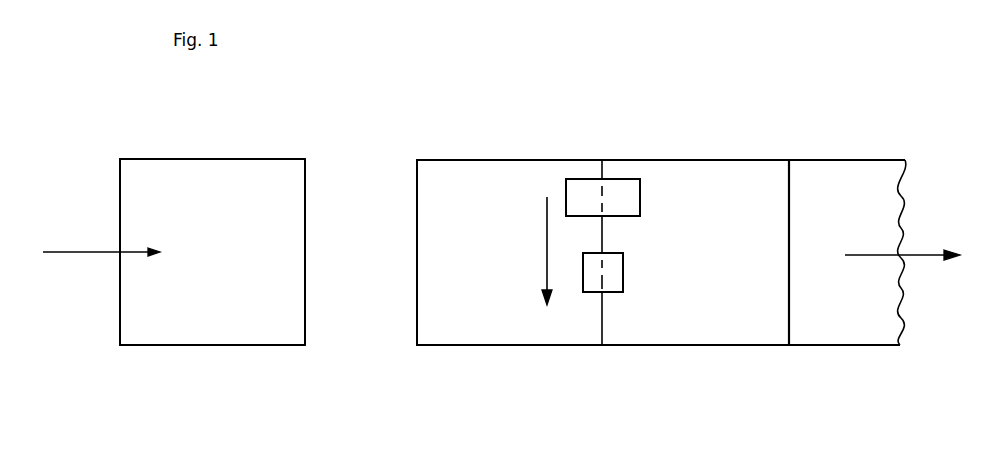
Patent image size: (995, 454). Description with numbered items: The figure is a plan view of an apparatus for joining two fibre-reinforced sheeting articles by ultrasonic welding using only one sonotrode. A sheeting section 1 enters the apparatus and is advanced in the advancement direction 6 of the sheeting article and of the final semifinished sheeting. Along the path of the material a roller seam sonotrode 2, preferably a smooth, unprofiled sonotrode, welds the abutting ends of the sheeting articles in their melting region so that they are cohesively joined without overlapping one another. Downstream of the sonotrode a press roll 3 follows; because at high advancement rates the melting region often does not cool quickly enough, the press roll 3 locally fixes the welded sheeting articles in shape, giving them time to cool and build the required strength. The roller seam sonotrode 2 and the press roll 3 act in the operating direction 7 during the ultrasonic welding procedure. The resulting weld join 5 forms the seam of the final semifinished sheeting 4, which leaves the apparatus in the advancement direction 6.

The sheeting section 1 is at (184, 192).
The roller seam sonotrode 2 is at (591, 270).
The press roll 3 is at (617, 200).
The final semifinished sheeting 4 is at (701, 212).
The weld join 5 is at (789, 320).
The advancement direction of sheeting article and of the final semifinished sheeting 6 is at (88, 252).
The operating direction of roller seam sonotrode and of press roll during ultrasonic 7 is at (545, 262).